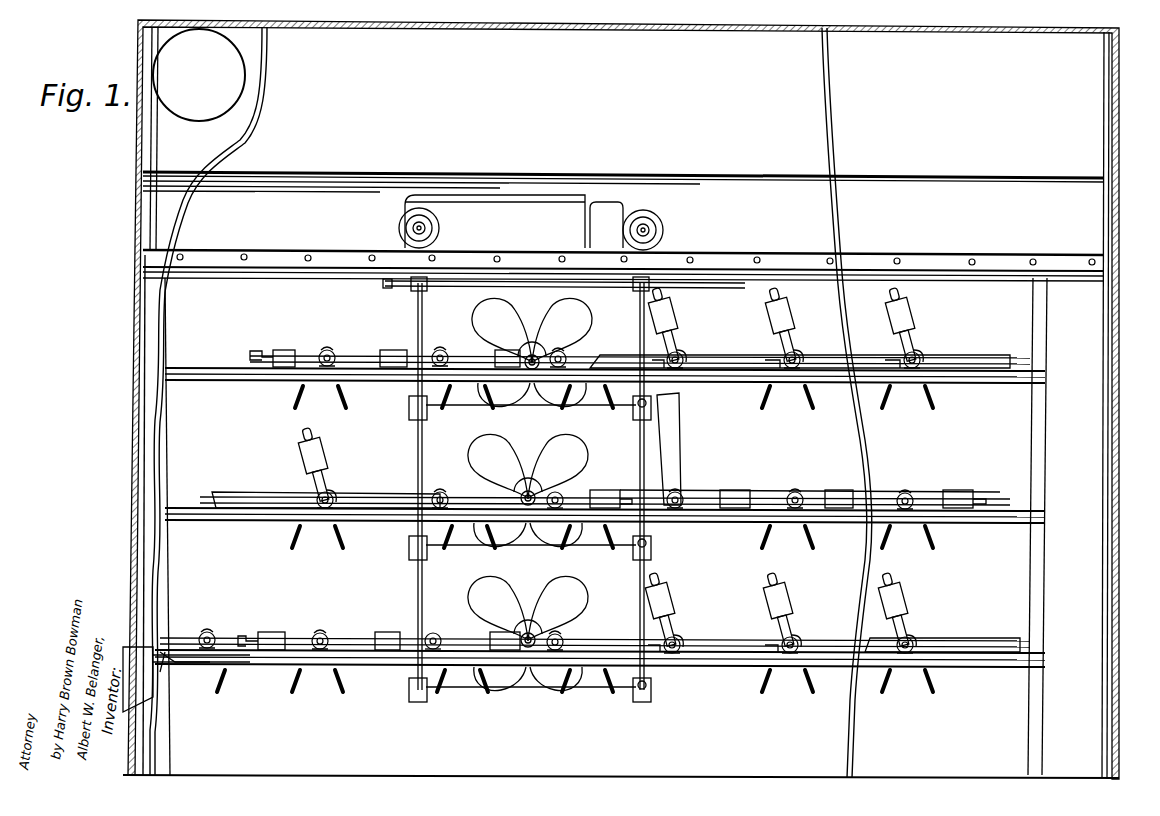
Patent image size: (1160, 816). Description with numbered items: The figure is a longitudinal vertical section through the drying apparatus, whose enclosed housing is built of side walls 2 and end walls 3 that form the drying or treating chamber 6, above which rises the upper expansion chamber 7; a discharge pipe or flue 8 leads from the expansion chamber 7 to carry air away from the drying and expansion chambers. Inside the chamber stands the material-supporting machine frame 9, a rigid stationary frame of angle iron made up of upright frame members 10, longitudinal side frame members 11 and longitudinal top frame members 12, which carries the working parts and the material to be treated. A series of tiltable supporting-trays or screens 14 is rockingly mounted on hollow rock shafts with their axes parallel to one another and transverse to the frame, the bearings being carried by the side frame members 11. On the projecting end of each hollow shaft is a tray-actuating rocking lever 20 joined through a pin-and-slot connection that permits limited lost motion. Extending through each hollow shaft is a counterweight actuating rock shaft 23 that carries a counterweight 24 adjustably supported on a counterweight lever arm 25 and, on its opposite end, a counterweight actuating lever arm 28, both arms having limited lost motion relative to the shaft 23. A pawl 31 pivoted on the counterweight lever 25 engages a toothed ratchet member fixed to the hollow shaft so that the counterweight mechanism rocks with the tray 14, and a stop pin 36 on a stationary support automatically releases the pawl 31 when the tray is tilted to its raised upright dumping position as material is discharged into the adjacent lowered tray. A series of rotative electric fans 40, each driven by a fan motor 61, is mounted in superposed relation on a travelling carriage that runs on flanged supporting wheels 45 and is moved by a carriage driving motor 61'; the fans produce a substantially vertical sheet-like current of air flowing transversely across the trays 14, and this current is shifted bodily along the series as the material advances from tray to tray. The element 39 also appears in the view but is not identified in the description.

The side walls 2 is at (1045, 17).
The end walls 3 is at (133, 300).
The drying or treating chamber 6 is at (995, 332).
The upper expansion chamber 7 is at (482, 56).
The discharge pipe or flue 8 is at (170, 56).
The material-supporting machine frame 9 is at (1008, 158).
The upright frame members 10 is at (170, 432).
The longitudinal side frame members 11 is at (958, 384).
The longitudinal top frame members 12 is at (993, 267).
The tiltable supporting-trays or screens 14 is at (350, 354).
The tray-actuating rocking lever 20 is at (298, 390).
The counterweight actuating rock shaft 23 is at (330, 350).
The counterweight 24 is at (258, 352).
The counterweight lever arm 25 is at (284, 350).
The counterweight actuating lever arm 28 is at (347, 406).
The pawl 31 is at (322, 350).
The stop pin 36 is at (890, 366).
The valve box 39 is at (180, 672).
The rotative electric fans 40 is at (566, 328).
The flanged supporting wheels 45 is at (440, 229).
The fan motors 61 is at (529, 468).
The carriage driving motor 61' is at (549, 220).